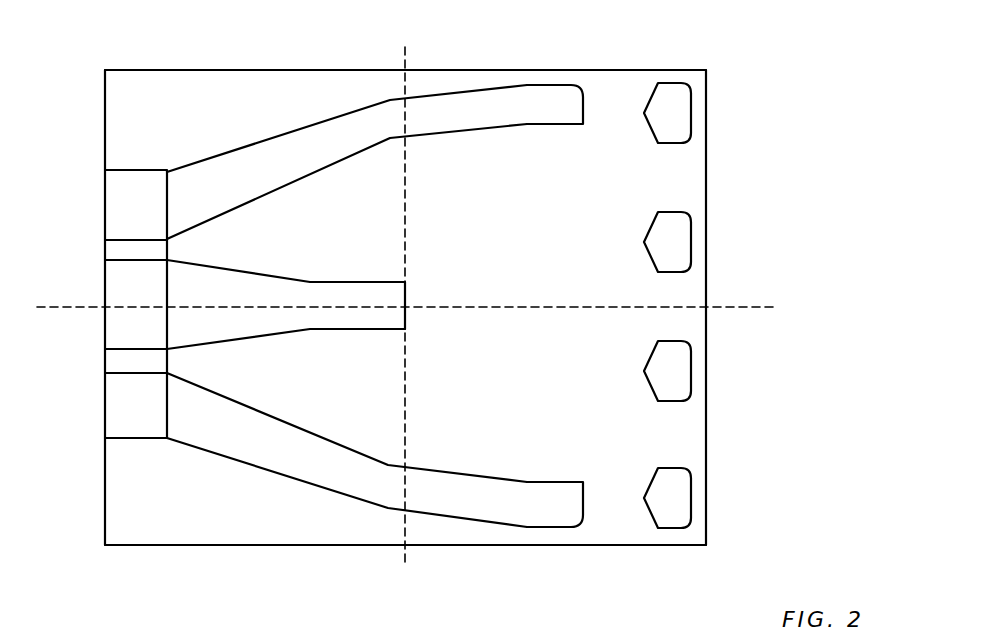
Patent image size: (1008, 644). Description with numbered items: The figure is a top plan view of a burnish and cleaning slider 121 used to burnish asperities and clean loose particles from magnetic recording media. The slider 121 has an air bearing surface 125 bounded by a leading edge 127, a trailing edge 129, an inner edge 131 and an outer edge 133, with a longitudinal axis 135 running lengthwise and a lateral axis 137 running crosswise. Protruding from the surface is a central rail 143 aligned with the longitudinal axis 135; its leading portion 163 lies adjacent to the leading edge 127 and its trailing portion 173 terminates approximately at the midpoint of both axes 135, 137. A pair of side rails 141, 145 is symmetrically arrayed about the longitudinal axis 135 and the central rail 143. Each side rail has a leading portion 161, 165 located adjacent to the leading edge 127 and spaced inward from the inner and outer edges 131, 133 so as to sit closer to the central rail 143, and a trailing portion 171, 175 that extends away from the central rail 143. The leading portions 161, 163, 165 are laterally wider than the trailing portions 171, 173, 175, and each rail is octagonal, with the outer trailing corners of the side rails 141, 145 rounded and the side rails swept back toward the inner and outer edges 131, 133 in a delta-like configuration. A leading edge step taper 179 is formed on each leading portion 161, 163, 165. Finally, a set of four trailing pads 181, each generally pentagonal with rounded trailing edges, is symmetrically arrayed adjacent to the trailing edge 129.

The slider 121 is at (785, 102).
The air bearing surface 125 is at (272, 527).
The leading edge 127 is at (105, 363).
The trailing edge 129 is at (706, 363).
The inner edge 131 is at (608, 545).
The outer edge 133 is at (595, 68).
The longitudinal axis 135 is at (747, 307).
The lateral axis 137 is at (402, 60).
The side rail 141 is at (277, 462).
The central rail 143 is at (192, 280).
The side rail 145 is at (262, 167).
The leading portion 161 is at (185, 447).
The leading portion 163 is at (193, 348).
The leading portion 165 is at (190, 160).
The trailing portion 171 is at (560, 490).
The trailing portion 173 is at (365, 295).
The trailing portion 175 is at (552, 98).
The leading edge step taper 179 is at (125, 202).
The trailing pads 181 is at (680, 492).